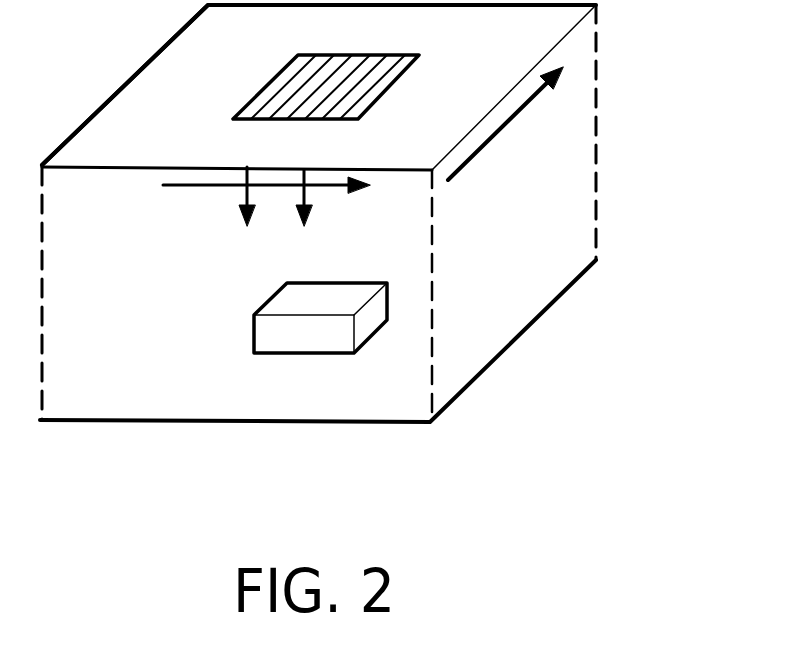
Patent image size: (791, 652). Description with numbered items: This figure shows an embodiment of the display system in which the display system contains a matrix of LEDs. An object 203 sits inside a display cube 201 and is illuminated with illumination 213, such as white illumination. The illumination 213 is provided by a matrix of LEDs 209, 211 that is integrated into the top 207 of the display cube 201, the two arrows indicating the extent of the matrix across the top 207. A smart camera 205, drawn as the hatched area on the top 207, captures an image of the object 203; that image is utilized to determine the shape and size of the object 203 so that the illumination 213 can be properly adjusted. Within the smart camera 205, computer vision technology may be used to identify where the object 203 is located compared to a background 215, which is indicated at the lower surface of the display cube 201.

The display cube 201 is at (598, 123).
The object 203 is at (254, 332).
The smart camera 205 is at (270, 80).
The top 207 is at (120, 107).
The matrix of LEDs 209 is at (196, 187).
The matrix of LEDs 211 is at (488, 143).
The illumination 213 is at (307, 195).
The background 215 is at (128, 405).